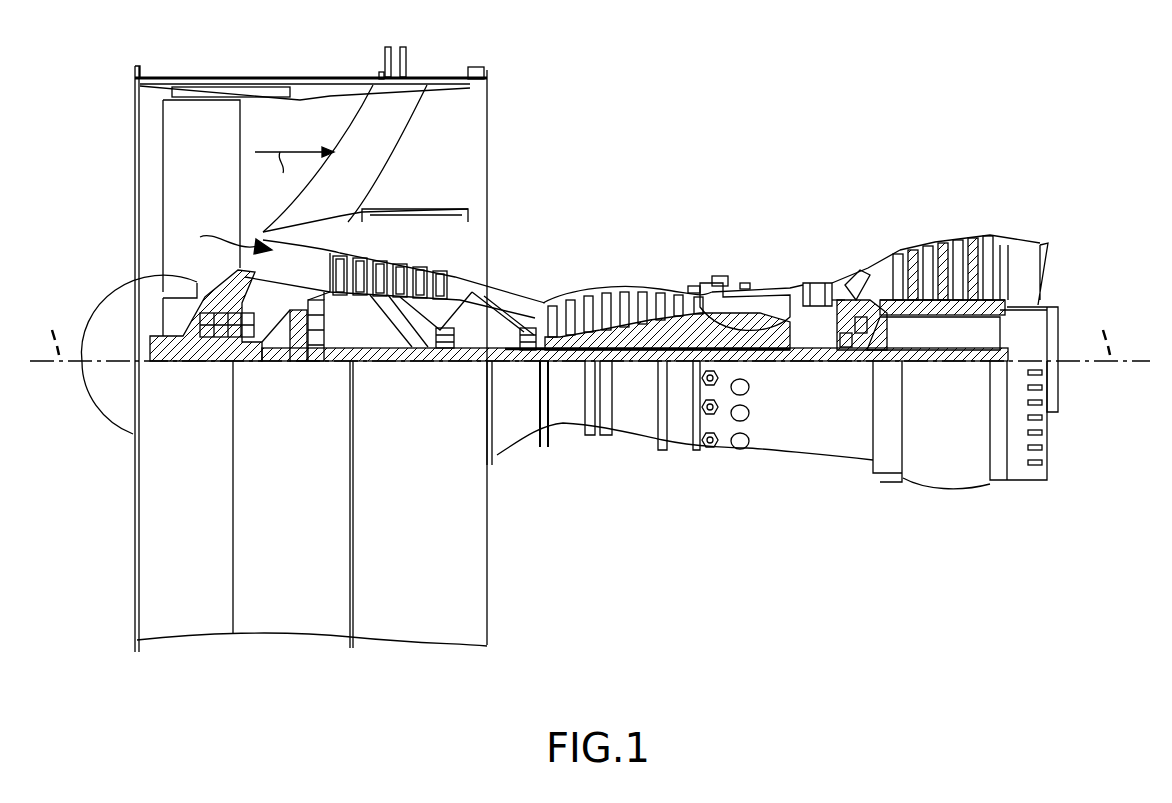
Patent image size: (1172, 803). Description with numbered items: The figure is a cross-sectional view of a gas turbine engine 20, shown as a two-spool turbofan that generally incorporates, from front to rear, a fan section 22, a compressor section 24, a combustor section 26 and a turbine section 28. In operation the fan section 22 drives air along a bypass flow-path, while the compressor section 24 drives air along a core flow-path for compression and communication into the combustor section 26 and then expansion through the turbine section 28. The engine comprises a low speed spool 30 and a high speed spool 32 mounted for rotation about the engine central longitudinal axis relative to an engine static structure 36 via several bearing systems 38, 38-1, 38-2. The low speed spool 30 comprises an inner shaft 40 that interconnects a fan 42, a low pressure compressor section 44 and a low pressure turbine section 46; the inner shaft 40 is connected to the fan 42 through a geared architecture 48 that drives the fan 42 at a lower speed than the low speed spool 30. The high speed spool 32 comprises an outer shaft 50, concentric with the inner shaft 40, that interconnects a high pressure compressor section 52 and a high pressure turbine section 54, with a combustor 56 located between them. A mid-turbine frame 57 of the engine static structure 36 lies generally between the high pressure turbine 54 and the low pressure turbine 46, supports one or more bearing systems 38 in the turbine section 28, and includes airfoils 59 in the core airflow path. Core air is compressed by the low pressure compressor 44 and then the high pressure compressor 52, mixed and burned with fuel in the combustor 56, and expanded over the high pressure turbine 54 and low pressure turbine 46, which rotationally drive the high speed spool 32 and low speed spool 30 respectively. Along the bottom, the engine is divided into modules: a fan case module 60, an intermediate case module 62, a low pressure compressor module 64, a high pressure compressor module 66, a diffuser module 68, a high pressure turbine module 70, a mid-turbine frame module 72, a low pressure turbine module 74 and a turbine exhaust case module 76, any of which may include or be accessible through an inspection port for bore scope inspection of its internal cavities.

The gas turbine engine 20 is at (797, 104).
The fan section 22 is at (352, 58).
The compressor section 24 is at (358, 178).
The combustor section 26 is at (700, 178).
The turbine section 28 is at (995, 178).
The low speed spool 30 is at (643, 378).
The high speed spool 32 is at (676, 330).
The engine static structure 36 is at (110, 670).
The bearing system 38 is at (852, 352).
The bearing system 38-1 is at (212, 338).
The bearing system 38-2 is at (443, 350).
The inner shaft 40 is at (510, 365).
The fan 42 is at (185, 195).
The low pressure compressor section 44 is at (420, 268).
The low pressure turbine section 46 is at (940, 258).
The geared architecture 48 is at (318, 378).
The outer shaft 50 is at (747, 345).
The high pressure compressor section 52 is at (620, 330).
The high pressure turbine section 54 is at (815, 283).
The combustor 56 is at (745, 303).
The mid-turbine frame 57 is at (853, 287).
The airfoils 59 is at (860, 290).
The fan case module 60 is at (322, 340).
The intermediate case module 62 is at (322, 317).
The Low Pressure Compressor (LPC) module 64 is at (542, 671).
The High Pressure Compressor (HPC) module 66 is at (542, 671).
The diffuser module 68 is at (678, 671).
The High Pressure Turbine (HPT) module 70 is at (790, 671).
The mid-turbine frame (MTF) module 72 is at (848, 671).
The Low Pressure Turbine (LPT) module 74 is at (902, 671).
The Turbine Exhaust Case (TEC) module 76 is at (990, 671).